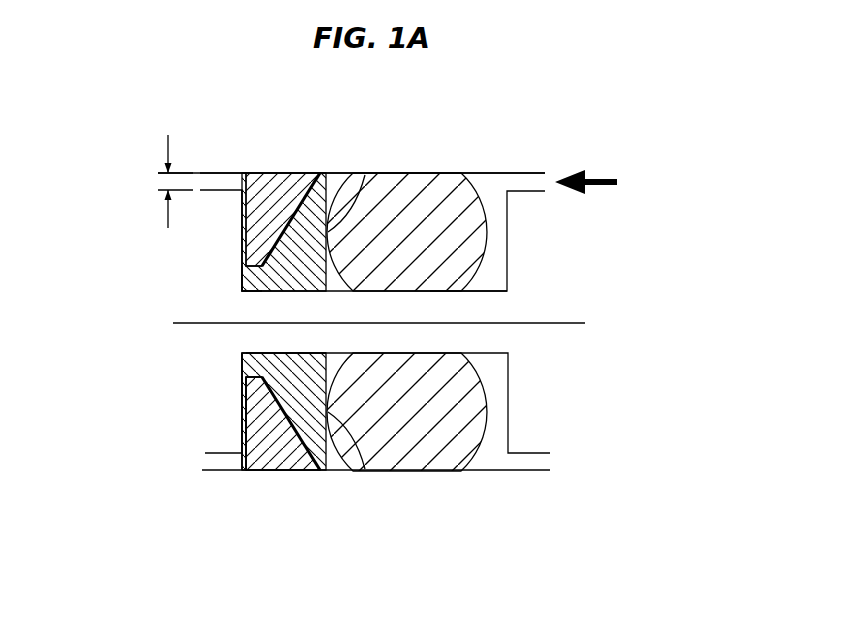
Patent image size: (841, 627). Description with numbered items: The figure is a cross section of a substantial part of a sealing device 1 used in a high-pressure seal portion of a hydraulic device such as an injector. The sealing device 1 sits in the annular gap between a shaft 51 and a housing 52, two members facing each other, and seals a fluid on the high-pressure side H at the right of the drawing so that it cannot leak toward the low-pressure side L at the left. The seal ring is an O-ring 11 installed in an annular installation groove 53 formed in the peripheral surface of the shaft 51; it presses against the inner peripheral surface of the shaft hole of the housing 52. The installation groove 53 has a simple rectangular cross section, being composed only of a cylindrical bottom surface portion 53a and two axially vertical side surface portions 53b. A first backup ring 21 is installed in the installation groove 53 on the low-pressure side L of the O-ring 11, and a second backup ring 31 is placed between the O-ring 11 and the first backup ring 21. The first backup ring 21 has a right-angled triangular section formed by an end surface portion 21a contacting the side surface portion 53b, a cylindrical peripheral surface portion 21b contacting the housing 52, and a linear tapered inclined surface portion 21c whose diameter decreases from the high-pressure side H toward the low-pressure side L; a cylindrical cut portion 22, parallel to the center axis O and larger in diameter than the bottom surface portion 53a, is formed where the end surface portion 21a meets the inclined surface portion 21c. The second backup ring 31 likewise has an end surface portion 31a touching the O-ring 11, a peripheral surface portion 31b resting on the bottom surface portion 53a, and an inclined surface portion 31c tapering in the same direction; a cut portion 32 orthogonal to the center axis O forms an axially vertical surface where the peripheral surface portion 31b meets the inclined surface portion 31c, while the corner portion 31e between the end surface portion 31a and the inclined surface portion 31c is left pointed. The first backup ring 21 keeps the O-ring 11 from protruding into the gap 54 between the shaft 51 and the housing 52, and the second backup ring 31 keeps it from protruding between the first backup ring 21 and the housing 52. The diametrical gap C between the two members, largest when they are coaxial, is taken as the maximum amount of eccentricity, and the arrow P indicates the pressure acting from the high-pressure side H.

The sealing device 1 is at (463, 172).
The O-ring 11 is at (412, 208).
The first backup ring 21 is at (277, 212).
The end surface portion 21a is at (246, 418).
The peripheral surface portion 21b is at (279, 472).
The inclined surface portion 21c is at (262, 403).
The cut portion 22 is at (243, 290).
The second backup ring 31 is at (305, 196).
The end surface portion 31a is at (366, 470).
The peripheral surface portion 31b is at (282, 353).
The inclined surface portion 31c is at (242, 420).
The corner portion 31e is at (328, 178).
The cut portion 32 is at (242, 362).
The shaft 51 is at (541, 398).
The housing 52 is at (527, 160).
The installation groove 53 is at (497, 233).
The bottom surface portion 53a is at (483, 290).
The side surface portion 53b is at (256, 221).
The gap 54 is at (222, 464).
The diametrical gap C is at (158, 187).
The low-pressure side L is at (105, 191).
The high-pressure side H is at (675, 193).
The pressure direction P is at (596, 182).
The center axis O is at (540, 330).